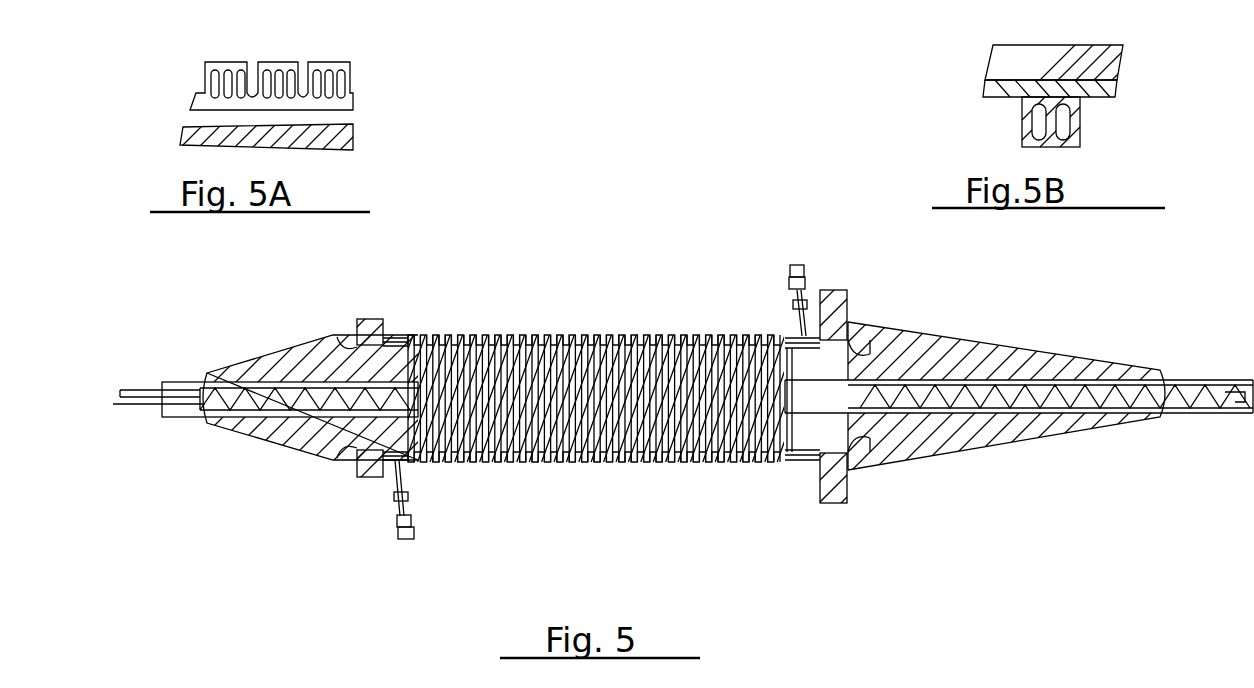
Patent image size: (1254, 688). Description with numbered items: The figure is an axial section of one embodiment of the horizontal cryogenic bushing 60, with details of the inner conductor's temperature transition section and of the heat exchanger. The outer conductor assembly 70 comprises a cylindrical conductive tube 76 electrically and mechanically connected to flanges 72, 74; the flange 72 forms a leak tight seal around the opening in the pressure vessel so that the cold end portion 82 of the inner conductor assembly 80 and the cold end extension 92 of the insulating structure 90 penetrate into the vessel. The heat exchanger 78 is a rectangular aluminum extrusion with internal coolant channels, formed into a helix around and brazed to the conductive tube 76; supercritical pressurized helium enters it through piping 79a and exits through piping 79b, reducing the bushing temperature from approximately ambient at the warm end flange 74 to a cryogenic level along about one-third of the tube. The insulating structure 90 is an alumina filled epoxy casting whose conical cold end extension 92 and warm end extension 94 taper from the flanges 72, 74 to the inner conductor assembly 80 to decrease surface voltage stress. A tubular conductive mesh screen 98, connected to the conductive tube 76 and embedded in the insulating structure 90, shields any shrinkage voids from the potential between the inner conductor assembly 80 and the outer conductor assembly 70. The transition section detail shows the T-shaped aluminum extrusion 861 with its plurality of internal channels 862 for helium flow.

In FIG. 5, the cryogenic bushing 60 is at (997, 522).
In FIG. 5, the outer conductor assembly 70 is at (645, 472).
In FIG. 5, the flange 72 is at (840, 291).
In FIG. 5, the flange 74 is at (357, 320).
In FIG. 5, the cylindrical conductive tube 76 is at (683, 337).
In FIG. 5B, the cylindrical conductive tube 76 is at (1100, 92).
In FIG. 5, the heat exchanger 78 is at (400, 334).
In FIG. 5B, the heat exchanger 78 is at (1082, 122).
In FIG. 5, the piping 79a is at (790, 277).
In FIG. 5, the piping 79b is at (415, 530).
In FIG. 5, the inner conductor assembly 80 is at (797, 454).
In FIG. 5, the cold end portion 82 is at (1043, 412).
In FIG. 5, the insulating structure 90 is at (527, 412).
In FIG. 5A, the insulating structure 90 is at (340, 141).
In FIG. 5B, the insulating structure 90 is at (1105, 60).
In FIG. 5, the cold end extension 92 is at (1000, 343).
In FIG. 5, the warm end extension 94 is at (270, 349).
In FIG. 5, the tubular conductive mesh screen 98 is at (868, 332).
In FIG. 5A, the T-shaped aluminum extrusion 861 is at (325, 62).
In FIG. 5A, the internal channels 862 is at (340, 88).